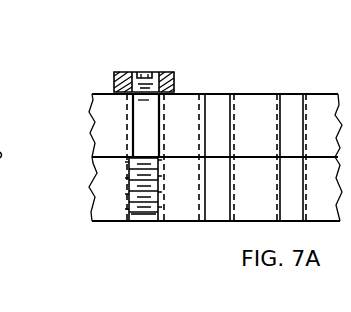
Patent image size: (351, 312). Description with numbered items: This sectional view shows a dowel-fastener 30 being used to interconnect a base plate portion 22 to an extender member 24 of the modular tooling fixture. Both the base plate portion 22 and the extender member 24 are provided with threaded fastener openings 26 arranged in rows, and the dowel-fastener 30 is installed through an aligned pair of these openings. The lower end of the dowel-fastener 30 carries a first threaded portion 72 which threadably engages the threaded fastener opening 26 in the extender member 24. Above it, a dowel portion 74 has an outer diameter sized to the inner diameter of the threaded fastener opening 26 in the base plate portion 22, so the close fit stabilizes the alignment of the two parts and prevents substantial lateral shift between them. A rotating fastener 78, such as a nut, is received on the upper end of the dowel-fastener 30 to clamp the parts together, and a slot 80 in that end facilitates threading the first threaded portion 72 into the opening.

The base plate portion 22 is at (322, 93).
The extender member 24 is at (96, 214).
The threaded fastener opening 26 is at (233, 103).
The dowel-fastener 30 is at (150, 210).
The first threaded portion 72 is at (130, 188).
The dowel portion 74 is at (137, 122).
The rotating fastener 78 is at (118, 73).
The slot 80 is at (140, 72).